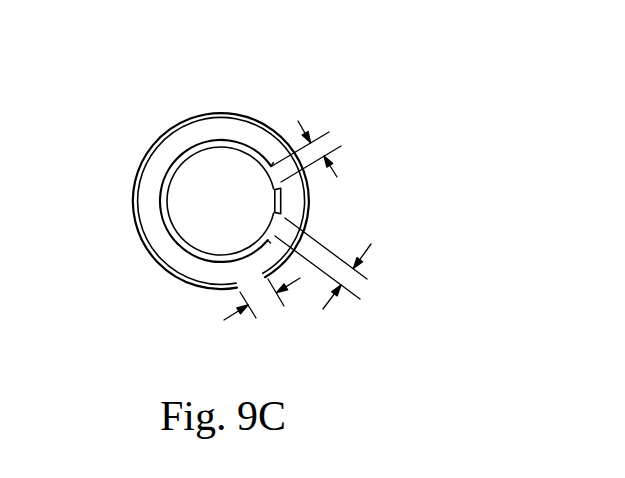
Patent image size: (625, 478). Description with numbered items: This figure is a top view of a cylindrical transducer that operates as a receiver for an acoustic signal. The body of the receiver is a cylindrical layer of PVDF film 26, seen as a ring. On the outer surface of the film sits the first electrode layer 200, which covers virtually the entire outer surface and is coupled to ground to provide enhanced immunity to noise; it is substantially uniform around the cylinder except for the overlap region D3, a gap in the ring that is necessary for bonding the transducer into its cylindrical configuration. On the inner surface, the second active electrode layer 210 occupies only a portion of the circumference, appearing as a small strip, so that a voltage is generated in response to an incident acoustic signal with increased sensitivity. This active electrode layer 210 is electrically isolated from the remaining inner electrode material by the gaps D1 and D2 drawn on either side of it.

The PVDF film 26 is at (223, 121).
The first electrode layer 200 is at (284, 179).
The second active electrode layer 210 is at (277, 200).
The gap D1 is at (323, 149).
The gap D2 is at (338, 267).
The overlap region D3 is at (265, 312).